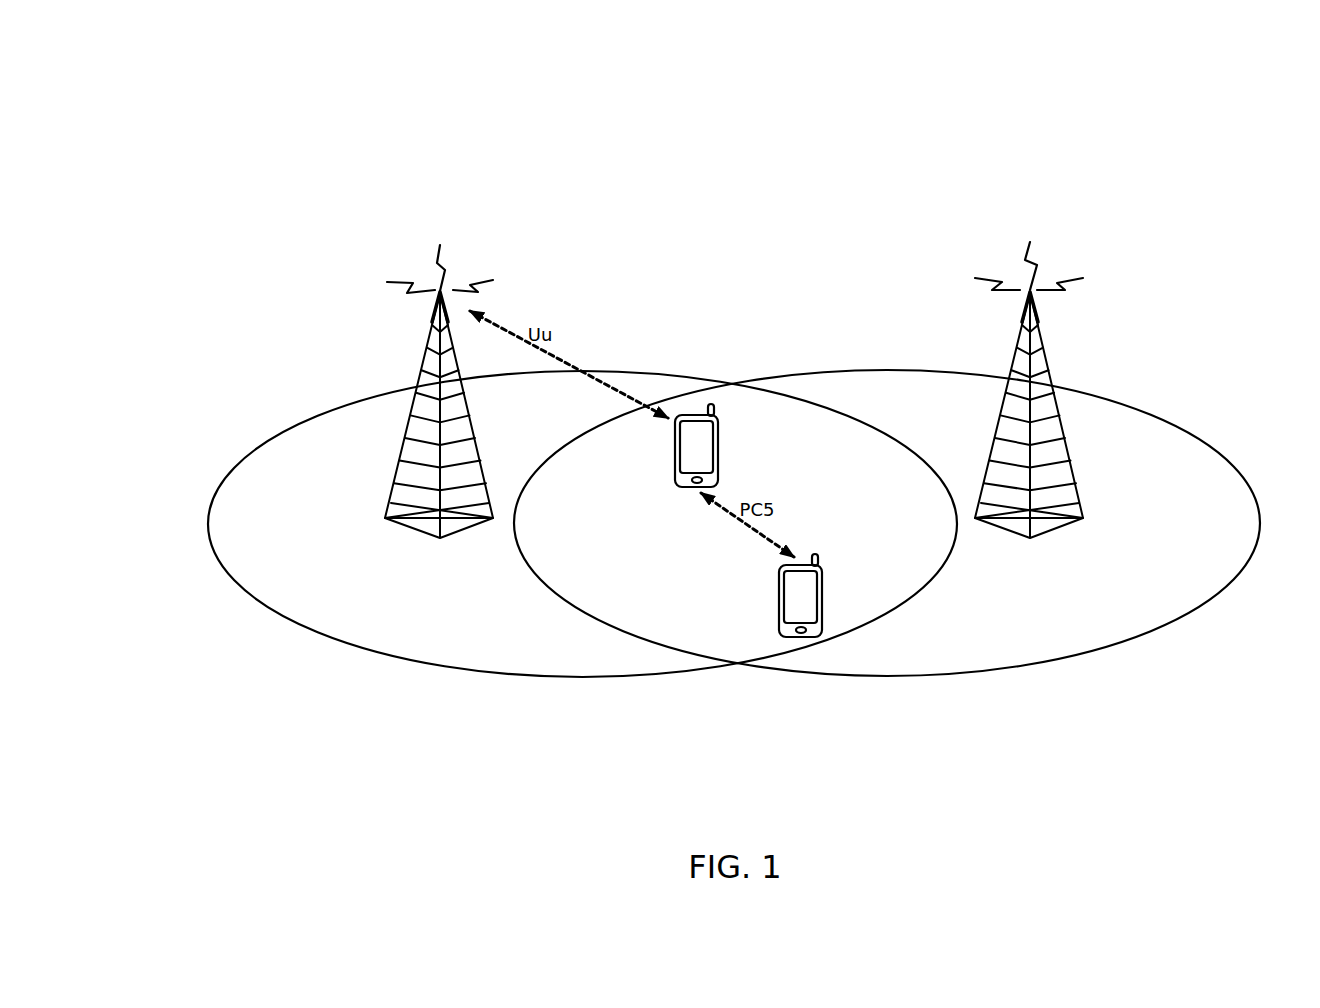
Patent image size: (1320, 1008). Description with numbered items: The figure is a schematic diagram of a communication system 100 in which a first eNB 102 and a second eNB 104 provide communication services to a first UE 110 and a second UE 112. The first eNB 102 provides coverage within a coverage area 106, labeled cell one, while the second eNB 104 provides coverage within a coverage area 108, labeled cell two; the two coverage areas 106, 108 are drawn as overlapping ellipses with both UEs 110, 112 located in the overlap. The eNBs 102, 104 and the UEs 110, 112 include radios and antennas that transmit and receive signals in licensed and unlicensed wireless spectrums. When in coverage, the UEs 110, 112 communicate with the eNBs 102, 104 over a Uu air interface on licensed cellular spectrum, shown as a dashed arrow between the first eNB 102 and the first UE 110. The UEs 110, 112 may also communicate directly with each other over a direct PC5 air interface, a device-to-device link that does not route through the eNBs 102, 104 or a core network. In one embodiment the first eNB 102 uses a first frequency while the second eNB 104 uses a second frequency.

The communication system 100 is at (482, 123).
The first eNB 102 is at (410, 420).
The second eNB 104 is at (1058, 420).
The coverage area 106 is at (630, 371).
The coverage area 108 is at (1127, 638).
The first UE 110 is at (718, 427).
The second UE 112 is at (788, 637).